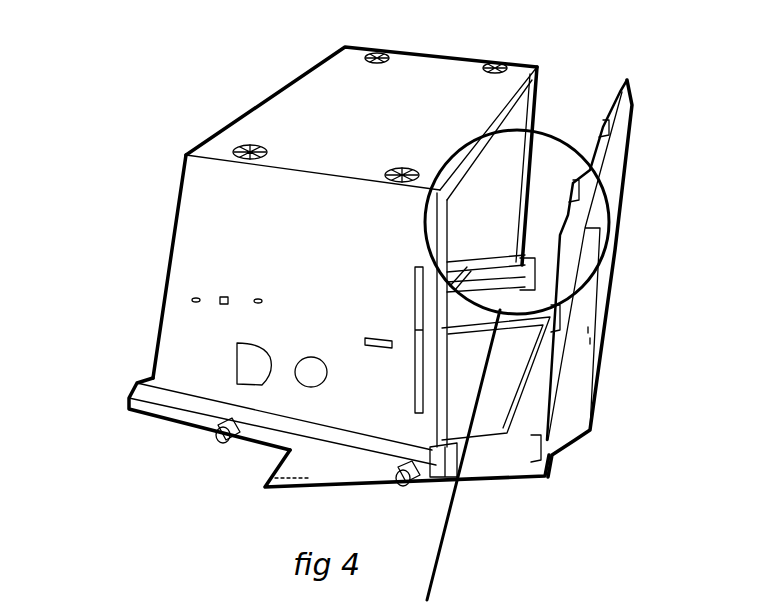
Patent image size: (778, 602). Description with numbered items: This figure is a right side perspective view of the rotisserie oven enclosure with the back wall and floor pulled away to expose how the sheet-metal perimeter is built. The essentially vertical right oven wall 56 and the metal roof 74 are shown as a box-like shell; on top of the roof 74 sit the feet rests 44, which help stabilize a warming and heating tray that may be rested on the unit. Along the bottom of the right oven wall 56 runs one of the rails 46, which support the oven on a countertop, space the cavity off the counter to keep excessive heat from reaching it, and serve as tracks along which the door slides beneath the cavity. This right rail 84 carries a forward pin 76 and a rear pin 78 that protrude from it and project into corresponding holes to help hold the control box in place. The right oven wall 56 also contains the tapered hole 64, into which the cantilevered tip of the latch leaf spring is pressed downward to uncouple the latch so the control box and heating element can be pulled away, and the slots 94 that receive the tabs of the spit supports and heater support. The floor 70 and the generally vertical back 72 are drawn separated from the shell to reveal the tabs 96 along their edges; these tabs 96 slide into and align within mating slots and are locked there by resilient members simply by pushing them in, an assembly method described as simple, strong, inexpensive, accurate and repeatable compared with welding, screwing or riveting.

The feet rests 44 is at (382, 52).
The rails 46 is at (162, 390).
The right oven wall 56 is at (195, 216).
The tapered hole 64 is at (363, 341).
The floor 70 is at (510, 350).
The back 72 is at (612, 175).
The roof 74 is at (347, 62).
The forward pin 76 is at (220, 433).
The rear pin 78 is at (403, 483).
The right rail 84 is at (145, 403).
The slots 94 is at (262, 303).
The tabs 96 is at (267, 487).